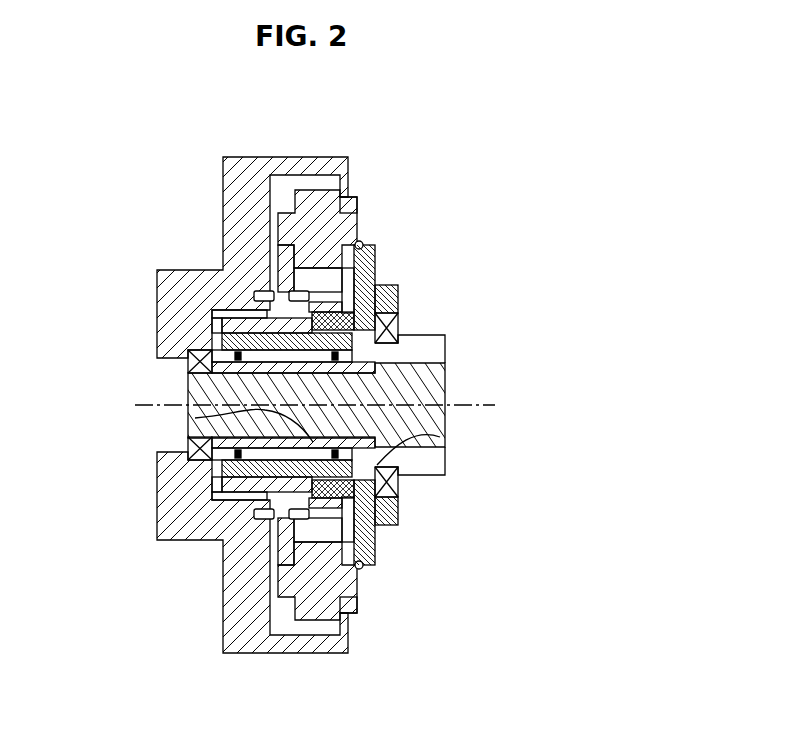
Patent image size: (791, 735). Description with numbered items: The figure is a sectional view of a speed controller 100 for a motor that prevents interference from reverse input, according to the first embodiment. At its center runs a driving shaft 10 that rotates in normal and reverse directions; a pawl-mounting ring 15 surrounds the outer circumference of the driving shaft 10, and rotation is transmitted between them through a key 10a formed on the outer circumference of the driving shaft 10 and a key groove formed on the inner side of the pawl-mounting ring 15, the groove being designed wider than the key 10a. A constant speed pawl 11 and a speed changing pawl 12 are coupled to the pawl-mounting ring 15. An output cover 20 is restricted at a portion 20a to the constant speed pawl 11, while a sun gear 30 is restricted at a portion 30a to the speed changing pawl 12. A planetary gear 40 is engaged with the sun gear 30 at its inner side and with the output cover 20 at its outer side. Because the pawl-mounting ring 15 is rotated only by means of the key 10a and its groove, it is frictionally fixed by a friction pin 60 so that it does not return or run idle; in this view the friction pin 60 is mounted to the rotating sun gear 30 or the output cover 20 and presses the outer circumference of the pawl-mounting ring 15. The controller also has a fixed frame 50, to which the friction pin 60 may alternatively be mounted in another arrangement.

The speed controller 100 is at (312, 119).
The driving shaft 10 is at (437, 387).
The key 10a is at (378, 358).
The constant speed pawl 11 is at (213, 421).
The speed changing pawl 12 is at (195, 418).
The pawl-mounting ring 15 is at (440, 437).
The output cover 20 is at (170, 270).
The portion of output cover 20a is at (222, 317).
The sun gear 30 is at (372, 278).
The portion of sun gear 30a is at (336, 323).
The planetary gear 40 is at (350, 228).
The fixed frame 50 is at (400, 300).
The friction pin 60 is at (292, 293).